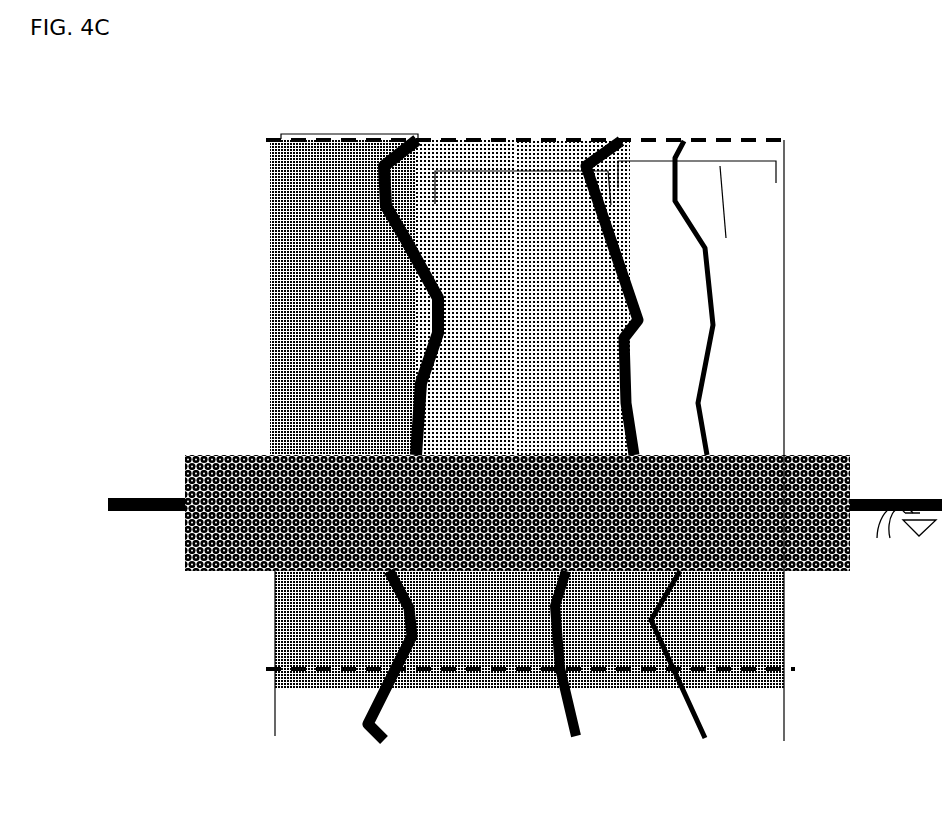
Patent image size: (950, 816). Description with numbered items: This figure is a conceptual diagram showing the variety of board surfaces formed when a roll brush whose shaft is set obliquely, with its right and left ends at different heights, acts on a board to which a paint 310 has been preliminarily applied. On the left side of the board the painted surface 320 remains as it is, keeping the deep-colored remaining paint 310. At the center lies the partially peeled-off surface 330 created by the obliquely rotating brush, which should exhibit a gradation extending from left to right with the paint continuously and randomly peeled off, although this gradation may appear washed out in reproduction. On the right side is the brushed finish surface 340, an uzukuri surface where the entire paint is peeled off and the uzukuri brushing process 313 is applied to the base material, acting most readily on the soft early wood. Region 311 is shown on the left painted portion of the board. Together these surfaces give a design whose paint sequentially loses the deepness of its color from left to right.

The paint 310 is at (327, 261).
The wood surface region 311 is at (378, 206).
The uzukuri (brushing process) 313 is at (588, 263).
The painted surface 320 is at (341, 126).
The partially peeled-off surface 330 is at (525, 163).
The brushed finish surface (uzukuri surface) 340 is at (689, 153).